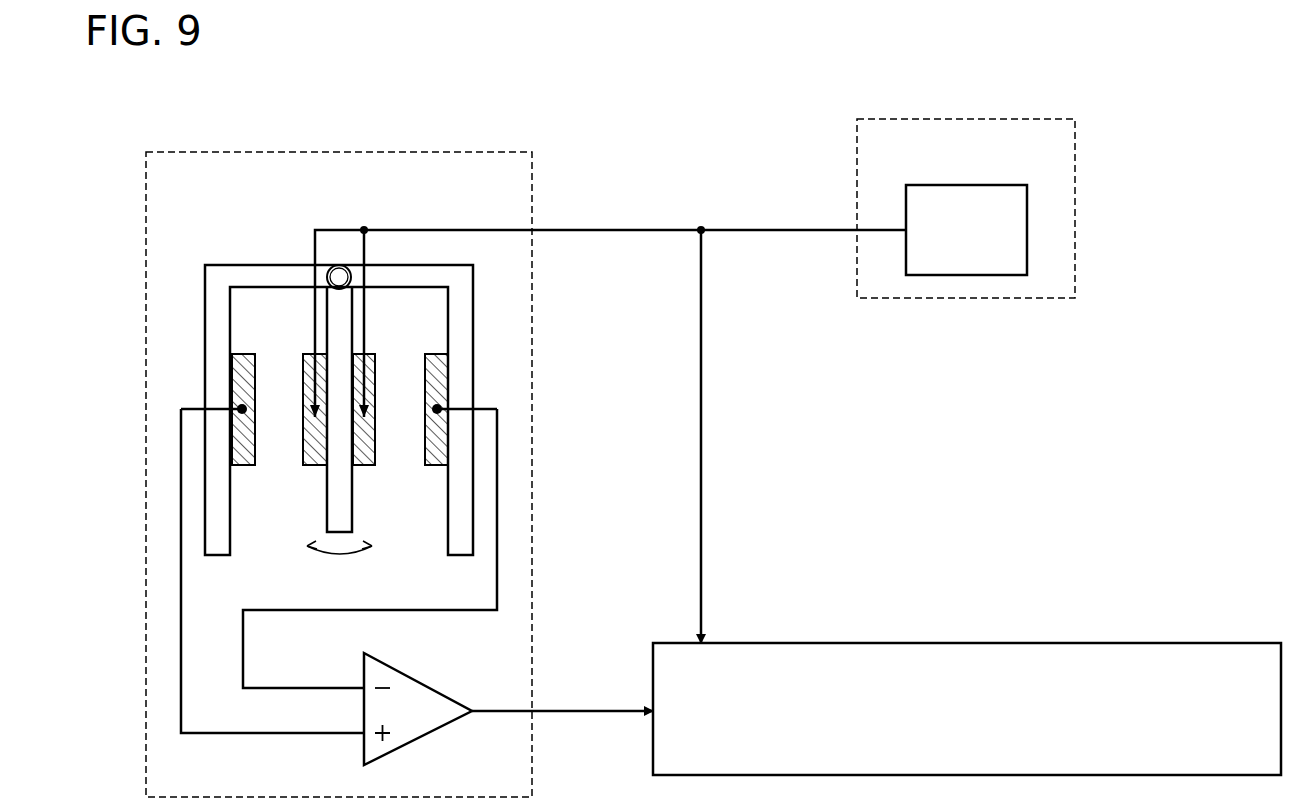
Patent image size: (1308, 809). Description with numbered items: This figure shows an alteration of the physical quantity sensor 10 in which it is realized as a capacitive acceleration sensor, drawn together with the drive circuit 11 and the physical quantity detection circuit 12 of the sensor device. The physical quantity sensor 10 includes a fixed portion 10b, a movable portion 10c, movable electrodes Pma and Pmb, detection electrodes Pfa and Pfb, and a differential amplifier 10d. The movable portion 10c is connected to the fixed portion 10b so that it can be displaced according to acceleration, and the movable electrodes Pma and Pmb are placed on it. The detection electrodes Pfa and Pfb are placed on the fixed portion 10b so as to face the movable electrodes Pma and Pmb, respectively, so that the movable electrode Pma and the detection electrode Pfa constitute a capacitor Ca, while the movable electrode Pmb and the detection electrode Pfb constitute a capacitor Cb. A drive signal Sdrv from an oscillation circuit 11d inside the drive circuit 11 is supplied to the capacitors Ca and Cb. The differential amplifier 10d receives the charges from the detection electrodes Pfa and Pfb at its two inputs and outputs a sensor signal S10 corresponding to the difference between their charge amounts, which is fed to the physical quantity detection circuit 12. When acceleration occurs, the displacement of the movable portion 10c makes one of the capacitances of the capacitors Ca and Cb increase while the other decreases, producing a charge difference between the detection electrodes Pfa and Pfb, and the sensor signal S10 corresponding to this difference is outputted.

The physical quantity sensor 10 is at (473, 152).
The fixed portion 10b is at (278, 262).
The movable portion 10c is at (327, 490).
The differential amplifier 10d is at (402, 673).
The detection electrode Pfb is at (257, 446).
The movable electrode Pmb is at (302, 368).
The movable electrode Pma is at (376, 366).
The detection electrode Pfa is at (424, 447).
The capacitor Cb is at (237, 410).
The capacitor Ca is at (442, 410).
The drive signal Sdrv is at (608, 423).
The sensor signal S10 is at (562, 697).
The drive circuit 11 is at (1028, 115).
The oscillation circuit 11d is at (970, 185).
The physical quantity detection circuit 12 is at (1124, 643).